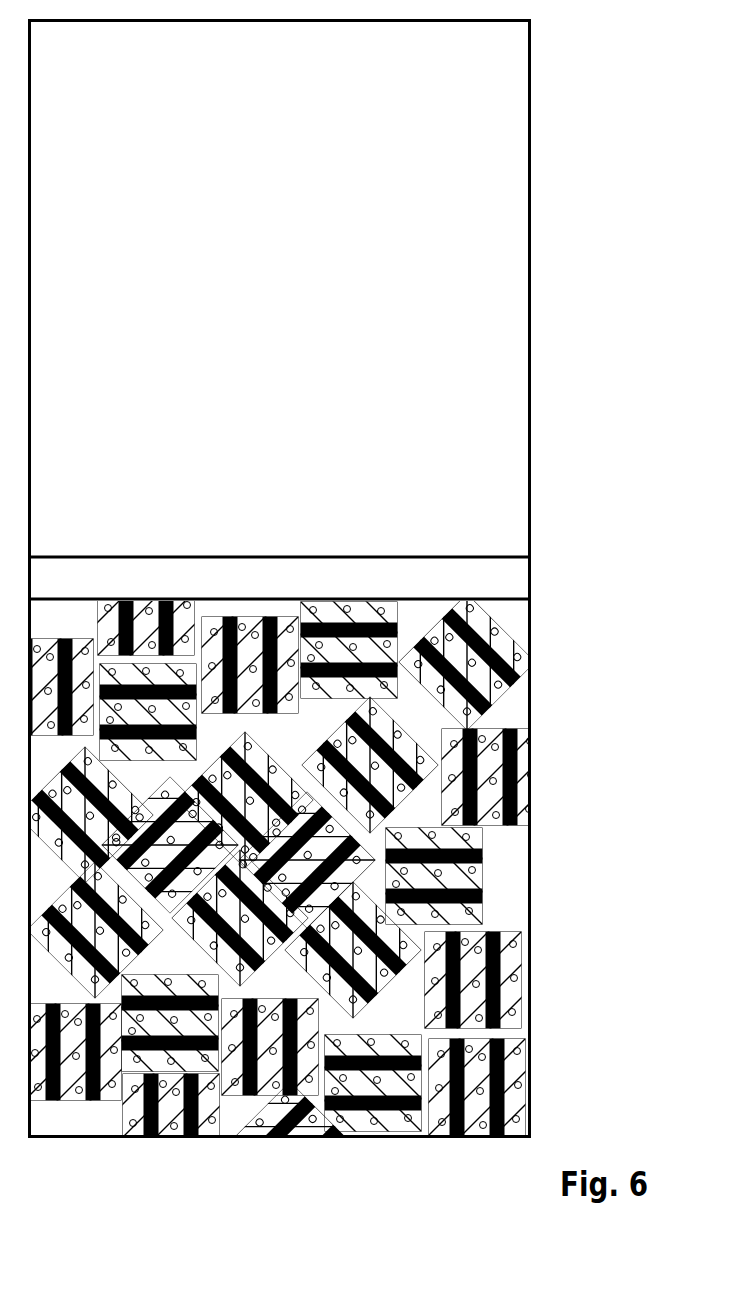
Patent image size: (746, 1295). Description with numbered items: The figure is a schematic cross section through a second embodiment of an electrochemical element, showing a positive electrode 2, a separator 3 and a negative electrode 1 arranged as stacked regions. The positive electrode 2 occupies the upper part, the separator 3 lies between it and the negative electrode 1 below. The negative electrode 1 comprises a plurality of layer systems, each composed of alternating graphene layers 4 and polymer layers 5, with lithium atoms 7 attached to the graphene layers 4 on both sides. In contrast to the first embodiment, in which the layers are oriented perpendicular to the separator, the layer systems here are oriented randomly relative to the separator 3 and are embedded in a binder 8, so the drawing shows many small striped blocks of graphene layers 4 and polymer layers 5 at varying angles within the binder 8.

The negative electrode 1 is at (373, 826).
The positive electrode 2 is at (511, 471).
The separator 3 is at (511, 578).
The graphene layer 4 is at (450, 937).
The polymer layer 5 is at (473, 1055).
The lithium atoms 7 is at (465, 973).
The binder 8 is at (510, 863).